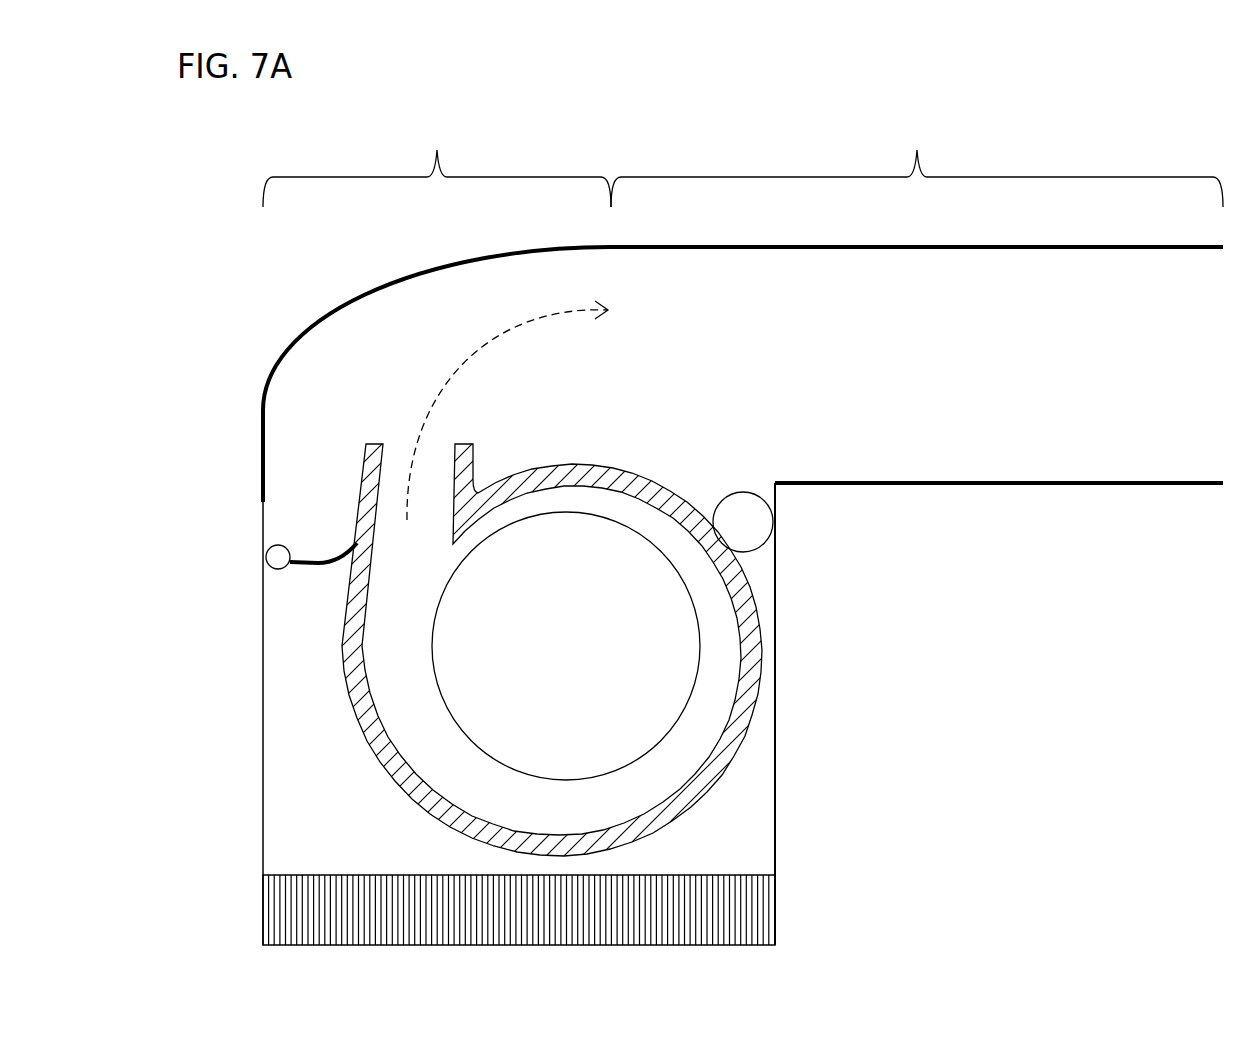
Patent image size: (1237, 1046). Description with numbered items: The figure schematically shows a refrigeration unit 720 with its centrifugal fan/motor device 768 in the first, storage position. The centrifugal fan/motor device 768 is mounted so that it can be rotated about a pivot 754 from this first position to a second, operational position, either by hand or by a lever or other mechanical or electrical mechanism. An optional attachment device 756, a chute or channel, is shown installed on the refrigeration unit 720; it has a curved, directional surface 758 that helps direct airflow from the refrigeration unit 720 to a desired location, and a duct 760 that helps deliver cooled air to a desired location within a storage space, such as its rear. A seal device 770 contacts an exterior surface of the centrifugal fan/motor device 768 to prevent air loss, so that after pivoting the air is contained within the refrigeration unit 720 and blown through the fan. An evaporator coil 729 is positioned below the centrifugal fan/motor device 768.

The curved, directional surface 758 is at (437, 166).
The duct 760 is at (917, 166).
The optional attachment device 756 is at (291, 352).
The seal device 770 is at (273, 563).
The centrifugal fan/motor device 768 is at (349, 695).
The pivot 754 is at (761, 517).
The refrigeration unit 720 is at (890, 637).
The evaporator coil 729 is at (775, 920).